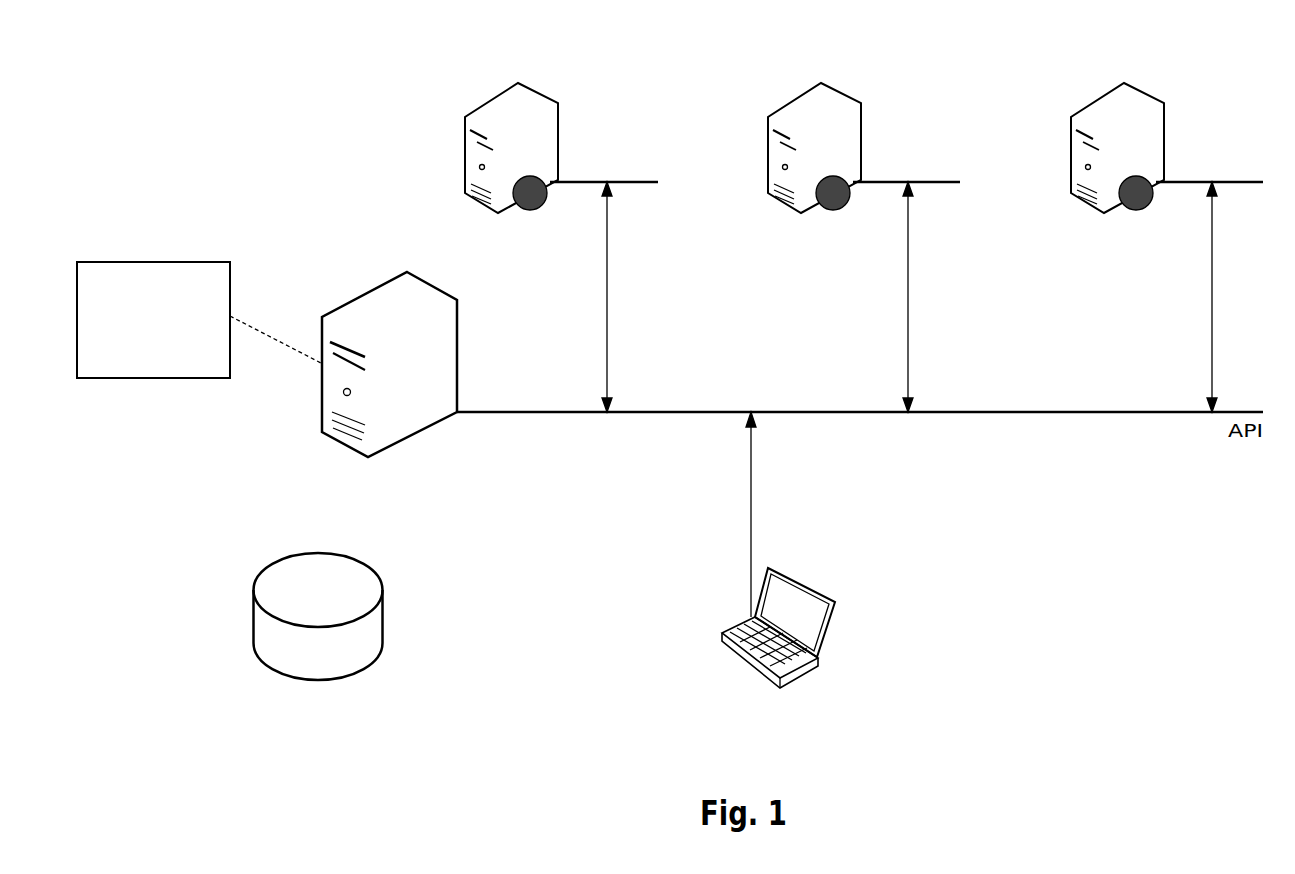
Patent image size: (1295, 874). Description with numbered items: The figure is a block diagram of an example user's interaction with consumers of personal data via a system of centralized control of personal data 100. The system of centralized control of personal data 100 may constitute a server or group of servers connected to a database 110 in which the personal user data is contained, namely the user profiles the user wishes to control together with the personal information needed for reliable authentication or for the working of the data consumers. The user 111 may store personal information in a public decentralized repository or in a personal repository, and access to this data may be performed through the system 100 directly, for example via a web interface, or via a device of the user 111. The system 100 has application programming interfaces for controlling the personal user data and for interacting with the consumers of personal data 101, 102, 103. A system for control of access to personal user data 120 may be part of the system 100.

The system of centralized control of personal data 100 is at (386, 364).
The consumer of personal data 101 is at (561, 236).
The consumer of personal data 102 is at (864, 236).
The consumer of personal data 103 is at (1167, 236).
The database 110 is at (343, 452).
The user 111 is at (777, 553).
The system for control of access to personal user data 120 is at (199, 307).